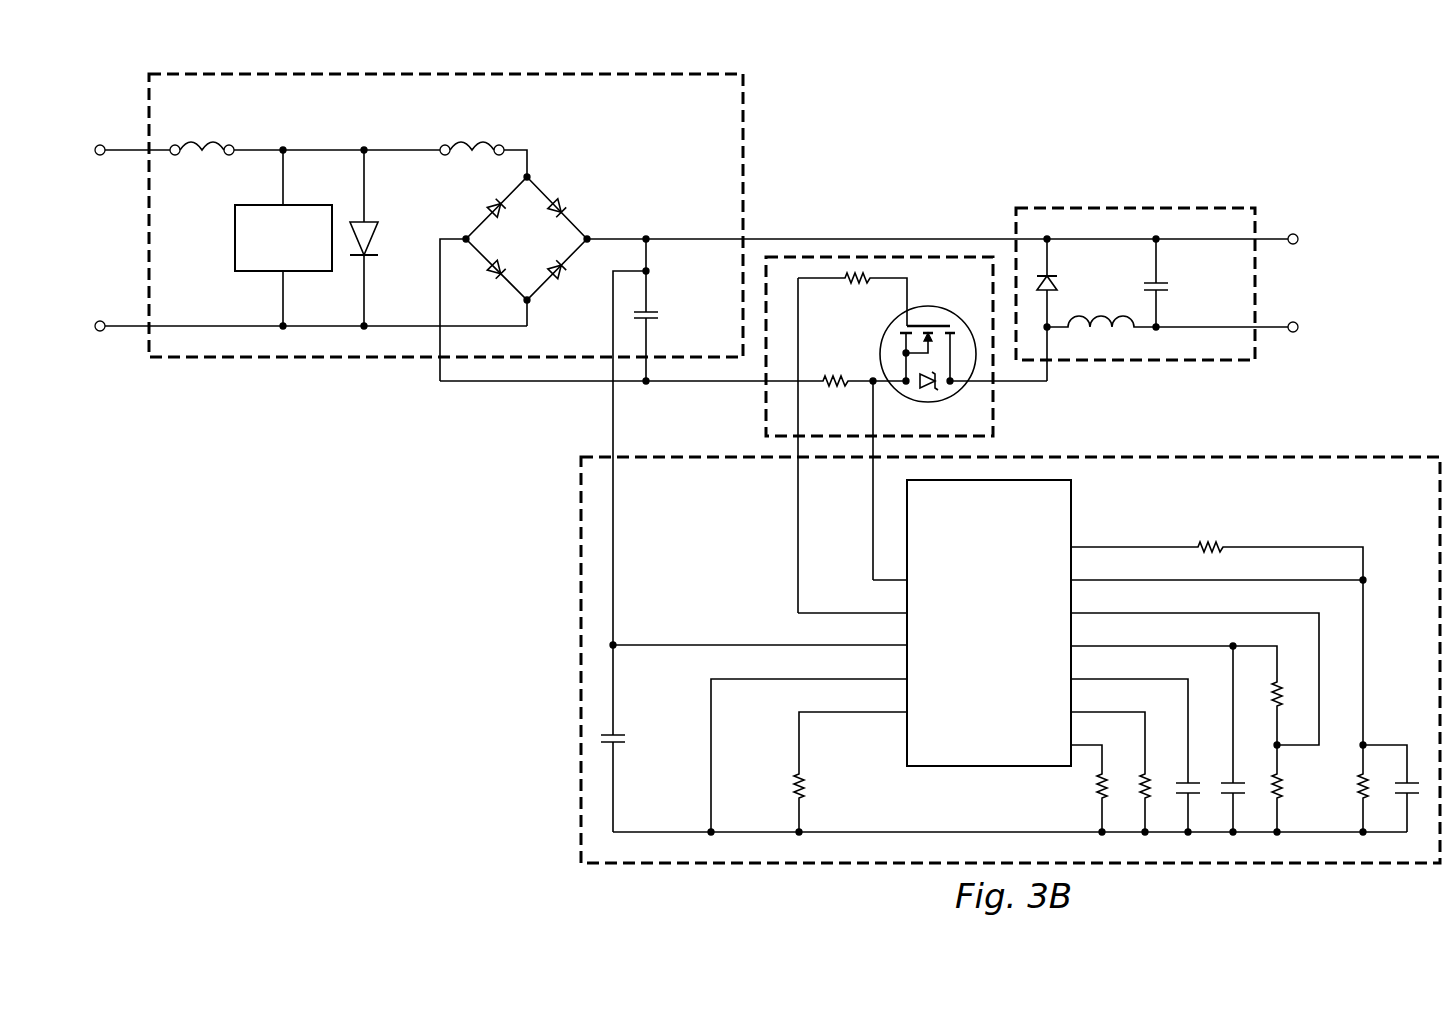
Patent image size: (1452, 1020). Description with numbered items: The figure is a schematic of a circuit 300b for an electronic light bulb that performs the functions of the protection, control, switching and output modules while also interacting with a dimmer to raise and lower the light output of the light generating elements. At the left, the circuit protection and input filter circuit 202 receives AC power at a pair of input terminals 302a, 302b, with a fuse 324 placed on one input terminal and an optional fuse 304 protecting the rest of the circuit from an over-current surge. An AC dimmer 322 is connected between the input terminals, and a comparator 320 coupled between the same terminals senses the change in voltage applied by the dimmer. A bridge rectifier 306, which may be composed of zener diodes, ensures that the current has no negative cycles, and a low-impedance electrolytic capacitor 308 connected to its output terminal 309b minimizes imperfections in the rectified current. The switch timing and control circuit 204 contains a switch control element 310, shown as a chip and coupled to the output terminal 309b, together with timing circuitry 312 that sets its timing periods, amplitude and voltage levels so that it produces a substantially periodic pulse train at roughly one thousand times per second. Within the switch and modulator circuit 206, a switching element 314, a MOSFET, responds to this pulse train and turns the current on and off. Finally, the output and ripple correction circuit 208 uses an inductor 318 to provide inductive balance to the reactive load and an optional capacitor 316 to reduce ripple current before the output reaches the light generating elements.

The circuit 300b is at (1068, 95).
The circuit protection and input filter circuit 202 is at (394, 74).
The input terminal 302a is at (125, 328).
The input terminal 302b is at (125, 150).
The fuse 324 is at (200, 148).
The fuse 304 is at (469, 148).
The AC dimmer 322 is at (235, 238).
The comparator 320 is at (370, 242).
The bridge rectifier 306 is at (560, 208).
The output terminal 309b is at (622, 239).
The capacitor 308 is at (655, 317).
The switch and modulator circuit 206 is at (993, 402).
The switching element 314 is at (880, 350).
The output and ripple correction circuit 208 is at (1145, 208).
The inductor 318 is at (1092, 310).
The capacitor 316 is at (1170, 288).
The switch timing and control circuit 204 is at (581, 672).
The switch control element 310 is at (988, 768).
The timing circuitry 312 is at (1310, 832).